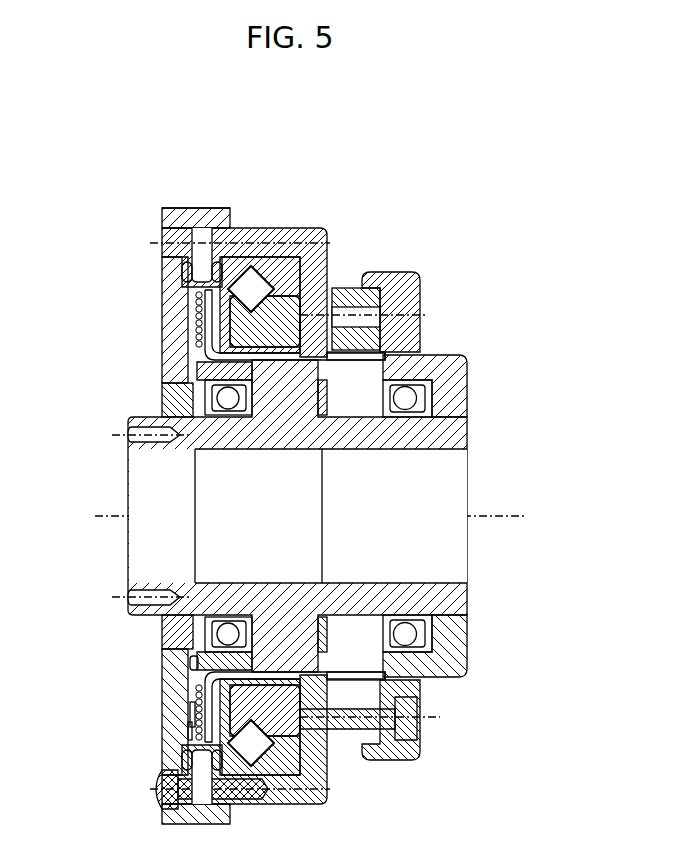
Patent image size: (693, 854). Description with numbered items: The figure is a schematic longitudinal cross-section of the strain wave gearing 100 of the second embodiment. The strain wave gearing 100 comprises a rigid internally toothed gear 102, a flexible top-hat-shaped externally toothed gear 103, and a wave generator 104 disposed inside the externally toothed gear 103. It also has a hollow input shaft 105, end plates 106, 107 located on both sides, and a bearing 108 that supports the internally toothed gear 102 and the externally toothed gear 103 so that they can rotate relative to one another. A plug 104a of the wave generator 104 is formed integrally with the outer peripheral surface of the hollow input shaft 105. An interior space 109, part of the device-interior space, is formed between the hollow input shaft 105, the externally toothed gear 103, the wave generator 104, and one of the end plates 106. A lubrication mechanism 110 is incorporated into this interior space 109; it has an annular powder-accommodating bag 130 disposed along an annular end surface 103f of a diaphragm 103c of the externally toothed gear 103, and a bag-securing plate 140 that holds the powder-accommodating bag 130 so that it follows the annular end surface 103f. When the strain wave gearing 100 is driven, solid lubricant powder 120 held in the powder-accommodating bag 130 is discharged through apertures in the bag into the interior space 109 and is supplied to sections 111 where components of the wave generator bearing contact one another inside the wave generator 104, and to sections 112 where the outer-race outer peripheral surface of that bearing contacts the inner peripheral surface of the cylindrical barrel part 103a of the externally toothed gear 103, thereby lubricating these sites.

The strain wave gearing 100 is at (377, 196).
The rigid internally toothed gear 102 is at (350, 328).
The flexible top-hat-shaped externally toothed gear 103 is at (292, 345).
The cylindrical barrel part 103a is at (322, 390).
The diaphragm 103c is at (230, 226).
The annular end surface 103f is at (196, 300).
The wave generator 104 is at (395, 366).
The plug 104a is at (355, 440).
The hollow input shaft 105 is at (470, 430).
The end plate 106 is at (177, 206).
The end plate 107 is at (425, 290).
The bearing 108 is at (258, 220).
The interior space 109 is at (303, 658).
The lubrication mechanism 110 is at (196, 669).
The sections that make contact in the interior of the wave generator 111 is at (324, 385).
The sections that make contact between the wave generator and the externally toothed 112 is at (386, 370).
The solid lubricant powder 120 is at (195, 699).
The powder-accommodating bag 130 is at (190, 714).
The bag-securing plate 140 is at (185, 729).